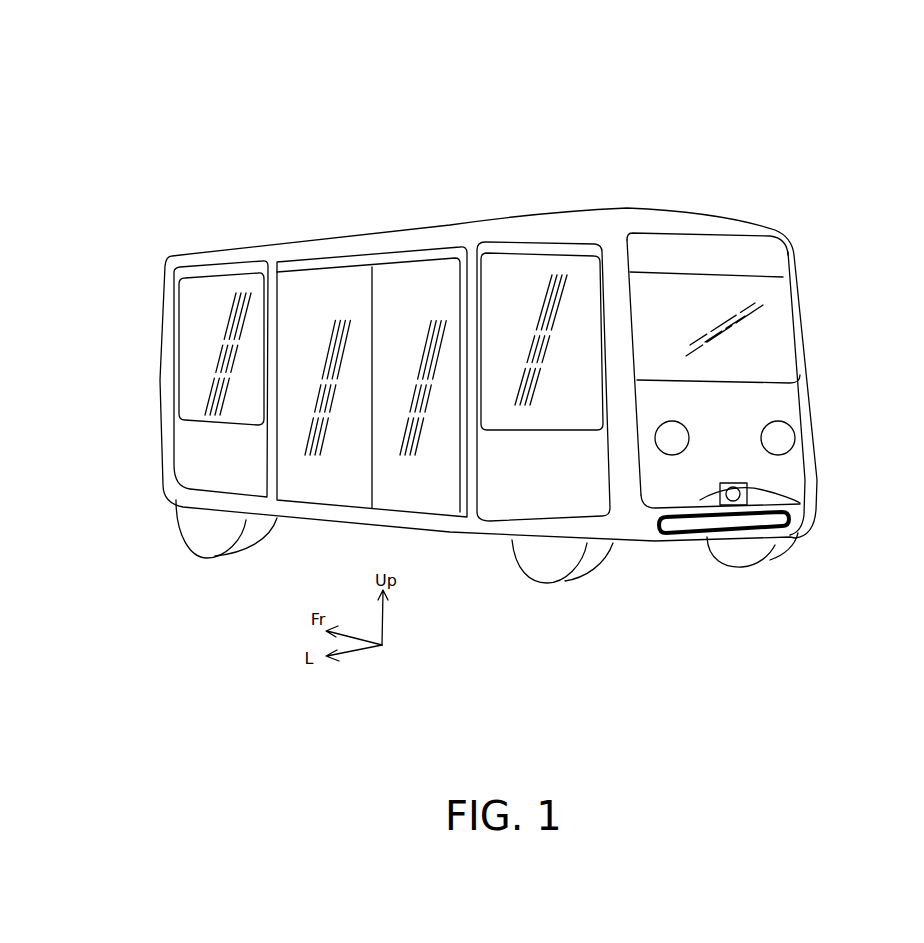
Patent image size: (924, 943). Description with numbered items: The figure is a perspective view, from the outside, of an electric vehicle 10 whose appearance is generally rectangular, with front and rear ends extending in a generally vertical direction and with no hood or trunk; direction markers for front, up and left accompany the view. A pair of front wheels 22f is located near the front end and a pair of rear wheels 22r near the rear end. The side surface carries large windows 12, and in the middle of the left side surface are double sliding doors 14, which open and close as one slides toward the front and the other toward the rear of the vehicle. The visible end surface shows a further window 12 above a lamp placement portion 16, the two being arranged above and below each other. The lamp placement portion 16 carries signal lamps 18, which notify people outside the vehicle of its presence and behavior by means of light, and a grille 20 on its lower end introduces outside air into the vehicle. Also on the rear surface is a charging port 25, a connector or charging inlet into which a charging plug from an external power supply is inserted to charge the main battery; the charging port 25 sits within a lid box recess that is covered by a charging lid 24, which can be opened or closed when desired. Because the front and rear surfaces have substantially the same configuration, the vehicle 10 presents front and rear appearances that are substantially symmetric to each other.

The vehicle 10 is at (492, 116).
The window 12 is at (218, 292).
The double sliding doors 14 is at (397, 270).
The lamp placement portion 16 is at (785, 405).
The signal lamps 18 is at (797, 437).
The grille 20 is at (743, 535).
The front wheels 22f is at (188, 527).
The rear wheels 22r is at (550, 563).
The charging lid 24 is at (748, 492).
The charging port 25 is at (713, 503).